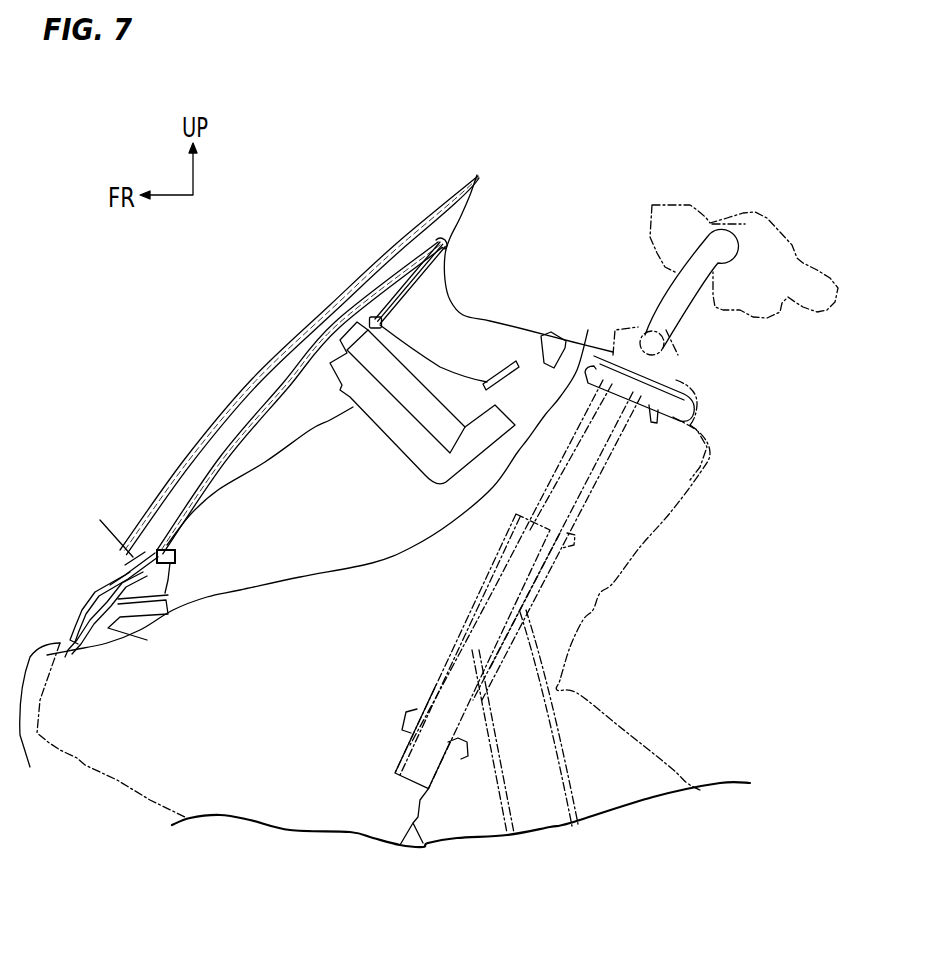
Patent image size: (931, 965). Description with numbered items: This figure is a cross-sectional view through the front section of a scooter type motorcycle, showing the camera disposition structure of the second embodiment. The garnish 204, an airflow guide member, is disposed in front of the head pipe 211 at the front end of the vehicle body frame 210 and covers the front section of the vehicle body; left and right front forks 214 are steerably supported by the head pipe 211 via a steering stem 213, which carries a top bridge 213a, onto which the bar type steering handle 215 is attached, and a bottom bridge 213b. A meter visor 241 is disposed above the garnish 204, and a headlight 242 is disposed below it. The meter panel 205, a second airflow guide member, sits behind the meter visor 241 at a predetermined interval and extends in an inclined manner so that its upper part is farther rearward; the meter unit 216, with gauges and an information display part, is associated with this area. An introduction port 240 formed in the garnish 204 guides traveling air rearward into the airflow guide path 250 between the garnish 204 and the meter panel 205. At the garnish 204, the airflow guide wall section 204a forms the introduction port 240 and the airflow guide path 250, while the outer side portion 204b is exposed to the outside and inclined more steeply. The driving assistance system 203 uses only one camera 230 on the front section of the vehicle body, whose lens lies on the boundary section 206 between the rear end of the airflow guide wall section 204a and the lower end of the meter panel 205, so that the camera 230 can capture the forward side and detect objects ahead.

The meter visor 241 is at (280, 347).
The meter panel 205 is at (168, 550).
The meter unit 216 is at (437, 390).
The bar type steering handle 215 is at (658, 302).
The top bridge 213a is at (717, 350).
The steering stem 213 is at (563, 513).
The head pipe 211 is at (537, 602).
The vehicle body frame 210 is at (560, 769).
The bottom bridge 213b is at (375, 768).
The garnish 204 is at (88, 607).
The introduction port 240 is at (110, 577).
The airflow guide wall section 204a is at (122, 573).
The outer side portion 204b is at (123, 560).
The airflow guide path 250 is at (143, 553).
The boundary section 206 is at (137, 528).
The camera 230 is at (180, 553).
The driving assistance system 203 is at (236, 614).
The headlight 242 is at (102, 730).
The front forks 214 is at (427, 847).